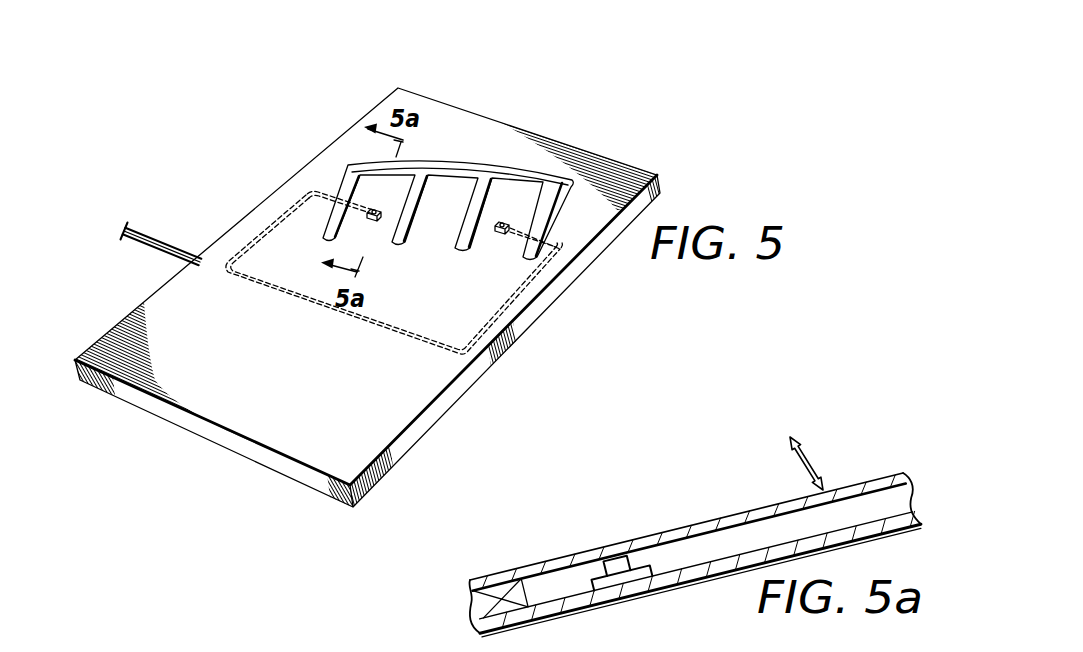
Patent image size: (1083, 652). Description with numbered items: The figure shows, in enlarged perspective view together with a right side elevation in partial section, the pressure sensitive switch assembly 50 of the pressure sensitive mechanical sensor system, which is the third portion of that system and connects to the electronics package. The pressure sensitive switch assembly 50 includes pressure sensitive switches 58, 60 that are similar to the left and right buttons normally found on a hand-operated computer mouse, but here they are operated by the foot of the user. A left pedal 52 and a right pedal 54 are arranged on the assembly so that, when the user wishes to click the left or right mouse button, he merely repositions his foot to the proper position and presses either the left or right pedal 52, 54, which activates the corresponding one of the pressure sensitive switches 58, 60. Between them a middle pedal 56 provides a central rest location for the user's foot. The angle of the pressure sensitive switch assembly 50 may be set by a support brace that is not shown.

In FIG. 5, the pressure sensitive switch assembly 50 is at (475, 91).
In FIG. 5, the left pedal 52 is at (383, 185).
In FIG. 5, the right pedal 54 is at (535, 200).
In FIG. 5a, the right pedal 54 is at (722, 517).
In FIG. 5, the middle pedal 56 is at (457, 188).
In FIG. 5, the pressure sensitive switch 58 is at (373, 207).
In FIG. 5, the pressure sensitive switch 60 is at (507, 218).
In FIG. 5a, the pressure sensitive switch 60 is at (653, 578).